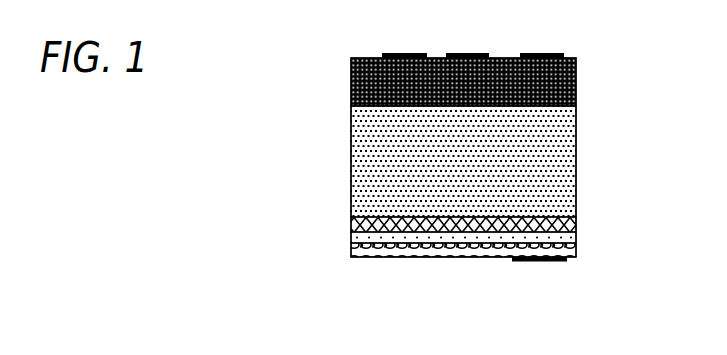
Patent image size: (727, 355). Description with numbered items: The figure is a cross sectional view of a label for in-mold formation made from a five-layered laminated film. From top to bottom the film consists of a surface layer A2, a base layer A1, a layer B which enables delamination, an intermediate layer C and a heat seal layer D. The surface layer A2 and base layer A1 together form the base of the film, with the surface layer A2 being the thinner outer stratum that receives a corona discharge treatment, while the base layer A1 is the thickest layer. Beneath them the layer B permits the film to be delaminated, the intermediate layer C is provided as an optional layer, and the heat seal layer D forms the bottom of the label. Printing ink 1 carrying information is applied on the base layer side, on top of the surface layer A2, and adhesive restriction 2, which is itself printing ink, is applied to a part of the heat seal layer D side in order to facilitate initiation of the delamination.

The printing ink 1 is at (564, 55).
The surface layer A2 is at (578, 87).
The base layer A1 is at (565, 135).
The layer which enables delamination B is at (577, 222).
The intermediate layer C is at (576, 238).
The heat seal layer D is at (577, 249).
The adhesive restriction 2 is at (567, 260).